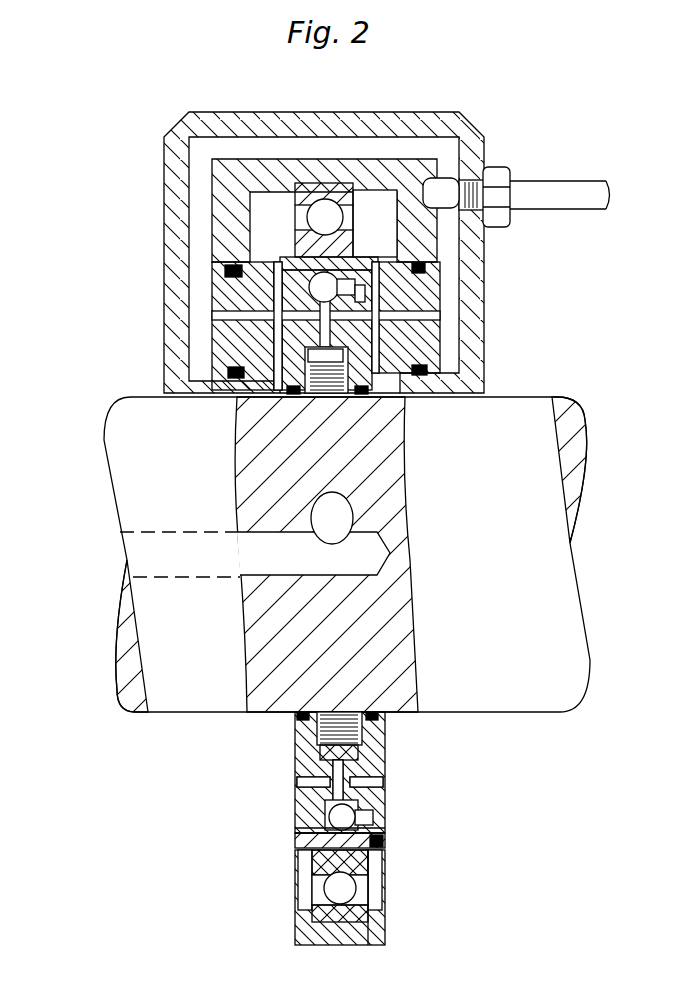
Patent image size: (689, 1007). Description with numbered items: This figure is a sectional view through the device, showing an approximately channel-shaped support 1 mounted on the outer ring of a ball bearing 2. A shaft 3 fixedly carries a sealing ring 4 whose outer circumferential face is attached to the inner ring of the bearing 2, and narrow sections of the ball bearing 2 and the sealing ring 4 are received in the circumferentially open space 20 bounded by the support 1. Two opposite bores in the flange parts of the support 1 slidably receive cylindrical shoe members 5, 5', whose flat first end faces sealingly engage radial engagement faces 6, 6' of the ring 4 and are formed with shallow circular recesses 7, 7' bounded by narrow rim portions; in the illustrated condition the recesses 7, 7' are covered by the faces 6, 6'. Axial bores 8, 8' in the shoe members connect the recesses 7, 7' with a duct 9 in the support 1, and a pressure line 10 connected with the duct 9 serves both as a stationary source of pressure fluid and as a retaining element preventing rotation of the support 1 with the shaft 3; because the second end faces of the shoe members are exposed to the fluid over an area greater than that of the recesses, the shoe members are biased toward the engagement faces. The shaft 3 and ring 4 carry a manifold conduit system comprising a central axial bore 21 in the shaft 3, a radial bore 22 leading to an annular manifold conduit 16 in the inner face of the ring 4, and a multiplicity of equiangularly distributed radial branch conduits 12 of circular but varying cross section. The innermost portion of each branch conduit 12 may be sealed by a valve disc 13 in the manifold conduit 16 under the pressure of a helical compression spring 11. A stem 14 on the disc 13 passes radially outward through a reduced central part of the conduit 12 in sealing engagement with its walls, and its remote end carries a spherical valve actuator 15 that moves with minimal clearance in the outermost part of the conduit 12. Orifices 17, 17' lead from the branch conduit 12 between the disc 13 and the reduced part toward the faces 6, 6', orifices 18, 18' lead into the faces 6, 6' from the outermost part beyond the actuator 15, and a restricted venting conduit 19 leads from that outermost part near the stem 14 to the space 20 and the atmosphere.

The support 1 is at (378, 125).
The ball bearing 2 is at (336, 180).
The shaft 3 is at (137, 463).
The sealing ring 4 is at (385, 772).
The cylindrical shoe member 5 is at (271, 323).
The cylindrical shoe member 5' is at (462, 334).
The radial engagement face 6 is at (225, 328).
The radial engagement face 6' is at (441, 292).
The shallow circular recess 7 is at (201, 329).
The shallow circular recess 7' is at (450, 328).
The axial bore 8 is at (271, 326).
The axial bore 8' is at (462, 325).
The duct 9 is at (404, 142).
The pressure line 10 is at (500, 180).
The helical compression spring 11 is at (330, 748).
The radial branch conduit 12 is at (355, 792).
The valve disc 13 is at (330, 765).
The stem 14 is at (320, 813).
The spherical valve actuator 15 is at (305, 840).
The annular manifold conduit 16 is at (370, 745).
The orifice 17 is at (281, 802).
The orifice 17' is at (400, 814).
The orifice 18 is at (300, 886).
The orifice 18' is at (411, 896).
The restricted venting conduit 19 is at (383, 835).
The space 20 is at (388, 236).
The central axial bore 21 is at (367, 542).
The radial bore 22 is at (345, 513).